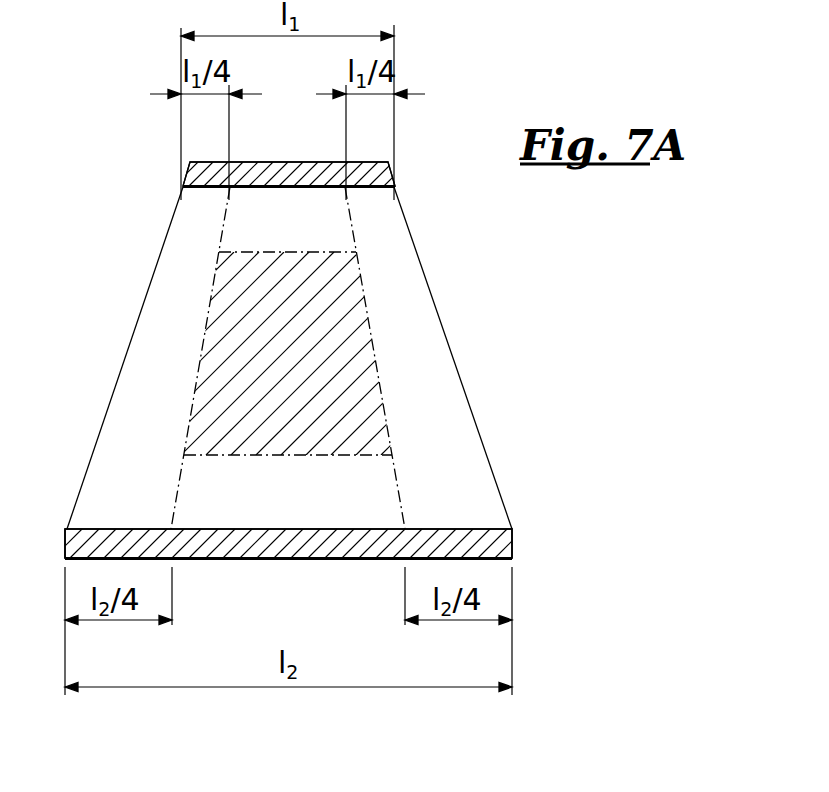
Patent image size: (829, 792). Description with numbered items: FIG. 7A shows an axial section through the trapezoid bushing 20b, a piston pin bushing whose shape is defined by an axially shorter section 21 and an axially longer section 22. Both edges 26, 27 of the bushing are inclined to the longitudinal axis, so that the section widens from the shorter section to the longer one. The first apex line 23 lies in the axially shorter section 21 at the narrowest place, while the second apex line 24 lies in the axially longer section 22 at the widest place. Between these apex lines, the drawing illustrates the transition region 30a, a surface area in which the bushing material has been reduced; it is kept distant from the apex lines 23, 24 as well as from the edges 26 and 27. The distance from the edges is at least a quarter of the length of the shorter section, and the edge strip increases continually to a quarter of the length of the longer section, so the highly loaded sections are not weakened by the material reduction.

The trapezoid bushing 20b is at (535, 565).
The axially shorter section 21 is at (191, 189).
The axially longer section 22 is at (75, 530).
The first apex line 23 is at (377, 189).
The second apex line 24 is at (110, 529).
The edge of piston pin bushing 26 is at (157, 262).
The edge of piston pin bushing 27 is at (450, 345).
The transition region 30a is at (208, 346).